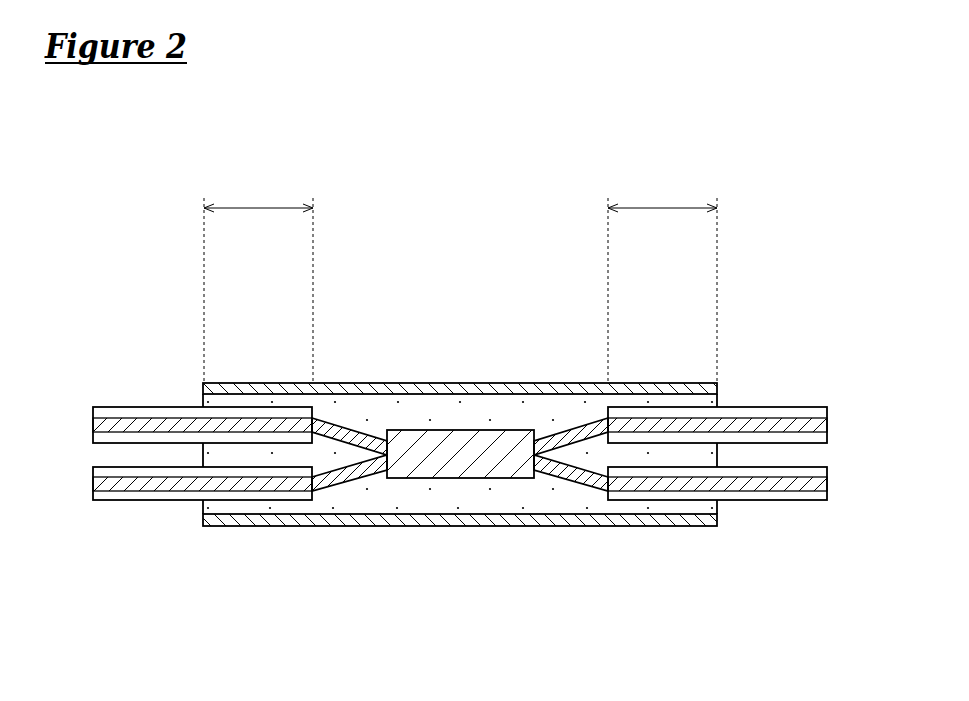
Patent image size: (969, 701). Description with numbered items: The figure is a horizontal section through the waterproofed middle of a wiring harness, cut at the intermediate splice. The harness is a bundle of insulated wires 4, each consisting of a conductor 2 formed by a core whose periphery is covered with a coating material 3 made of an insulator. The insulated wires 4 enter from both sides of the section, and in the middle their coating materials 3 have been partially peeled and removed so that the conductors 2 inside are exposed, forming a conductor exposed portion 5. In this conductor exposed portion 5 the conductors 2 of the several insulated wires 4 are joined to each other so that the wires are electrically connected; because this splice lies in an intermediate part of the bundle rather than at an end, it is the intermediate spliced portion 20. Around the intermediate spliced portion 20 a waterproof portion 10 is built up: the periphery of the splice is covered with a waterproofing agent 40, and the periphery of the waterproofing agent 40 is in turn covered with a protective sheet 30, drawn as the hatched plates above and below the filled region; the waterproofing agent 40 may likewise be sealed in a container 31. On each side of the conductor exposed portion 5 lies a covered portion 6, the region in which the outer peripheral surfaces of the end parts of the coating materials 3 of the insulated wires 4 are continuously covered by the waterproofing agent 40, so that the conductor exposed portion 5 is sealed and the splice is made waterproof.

The waterproof portion 10 is at (461, 414).
The intermediate spliced portion 20 is at (485, 505).
The protective sheet 30 is at (460, 456).
The transparent container 31 is at (263, 387).
The waterproofing agent 40 is at (480, 408).
The conductor exposed portion 5 is at (345, 402).
The insulated wire 4 is at (461, 456).
The conductor 2 is at (98, 423).
The coating material 3 is at (108, 410).
The covered portion 6 is at (258, 208).